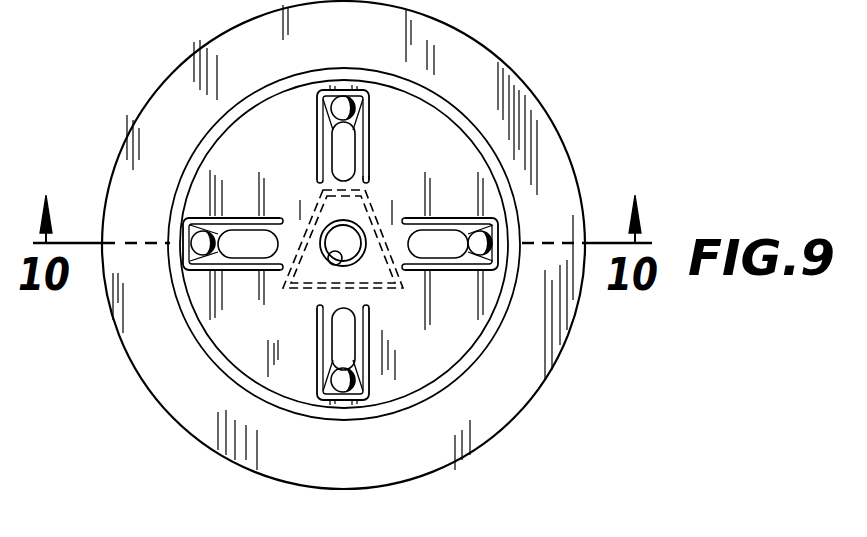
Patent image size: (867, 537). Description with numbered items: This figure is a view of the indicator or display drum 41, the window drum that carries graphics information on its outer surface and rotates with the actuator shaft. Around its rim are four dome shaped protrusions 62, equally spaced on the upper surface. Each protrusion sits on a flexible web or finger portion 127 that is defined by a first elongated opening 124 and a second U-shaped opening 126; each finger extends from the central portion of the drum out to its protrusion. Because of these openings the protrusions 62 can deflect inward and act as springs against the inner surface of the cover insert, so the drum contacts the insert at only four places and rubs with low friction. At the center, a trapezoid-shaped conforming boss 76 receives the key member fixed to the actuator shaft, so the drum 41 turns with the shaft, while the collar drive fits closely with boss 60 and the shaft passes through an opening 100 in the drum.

The indicator drum 41 is at (143, 93).
The dome shaped protrusions 62 is at (345, 100).
The U-shaped opening 126 is at (317, 132).
The elongated opening 124 is at (356, 138).
The web or finger portions 127 is at (366, 165).
The boss 60 is at (340, 222).
The conforming boss 76 is at (376, 216).
The opening 100 is at (333, 263).